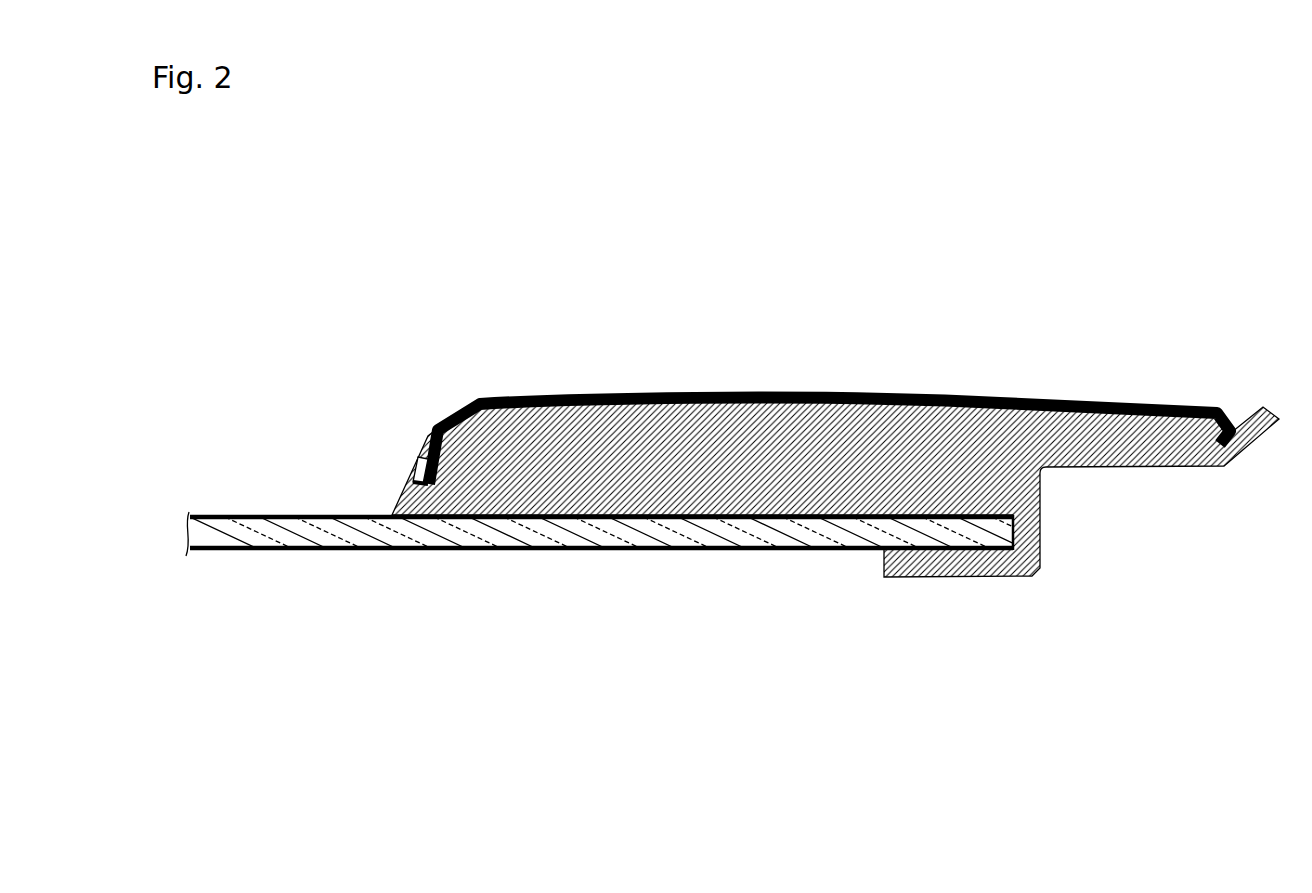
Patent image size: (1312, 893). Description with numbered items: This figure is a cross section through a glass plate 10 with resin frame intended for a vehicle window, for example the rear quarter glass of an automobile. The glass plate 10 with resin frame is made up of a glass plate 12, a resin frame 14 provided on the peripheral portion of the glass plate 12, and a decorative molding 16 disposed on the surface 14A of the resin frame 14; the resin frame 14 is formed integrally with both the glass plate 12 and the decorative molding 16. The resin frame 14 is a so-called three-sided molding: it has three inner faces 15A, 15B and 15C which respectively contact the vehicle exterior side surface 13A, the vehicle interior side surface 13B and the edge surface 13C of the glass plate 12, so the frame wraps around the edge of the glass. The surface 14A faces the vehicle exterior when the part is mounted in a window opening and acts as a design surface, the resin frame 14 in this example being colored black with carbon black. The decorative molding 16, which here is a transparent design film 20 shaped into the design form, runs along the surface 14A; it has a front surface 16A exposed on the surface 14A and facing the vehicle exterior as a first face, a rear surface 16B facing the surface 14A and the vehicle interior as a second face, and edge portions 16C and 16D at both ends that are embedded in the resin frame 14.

The glass plate with resin frame 10 is at (1055, 303).
The glass plate 12 is at (654, 531).
The vehicle exterior side surface 13A is at (297, 516).
The vehicle interior side surface 13B is at (340, 550).
The edge surface 13C is at (1006, 535).
The resin frame 14 is at (714, 489).
The surface of resin frame 14A is at (748, 404).
The inner face 15A is at (650, 520).
The inner face 15B is at (922, 549).
The inner face 15C is at (1003, 535).
The decorative molding 16 is at (902, 385).
The front surface 16A is at (1077, 398).
The rear surface 16B is at (781, 406).
The edge portion 16C is at (412, 468).
The edge portion 16D is at (1228, 442).
The transparent design film 20 is at (598, 402).